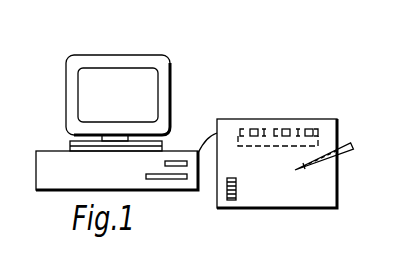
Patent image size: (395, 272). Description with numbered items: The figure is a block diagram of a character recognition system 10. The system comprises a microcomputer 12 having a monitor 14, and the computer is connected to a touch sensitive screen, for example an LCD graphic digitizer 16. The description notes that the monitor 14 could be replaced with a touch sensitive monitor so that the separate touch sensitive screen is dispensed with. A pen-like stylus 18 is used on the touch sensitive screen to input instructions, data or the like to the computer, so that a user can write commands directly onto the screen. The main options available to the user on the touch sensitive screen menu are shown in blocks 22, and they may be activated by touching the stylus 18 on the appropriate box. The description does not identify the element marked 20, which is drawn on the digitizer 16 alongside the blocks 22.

The character recognition system 10 is at (205, 80).
The microcomputer 12 is at (54, 150).
The monitor 14 is at (78, 58).
The LCD graphic digitizer 16 is at (330, 128).
The pen-like stylus 18 is at (345, 158).
The button menu strip 20 is at (263, 128).
The blocks 22 is at (226, 188).